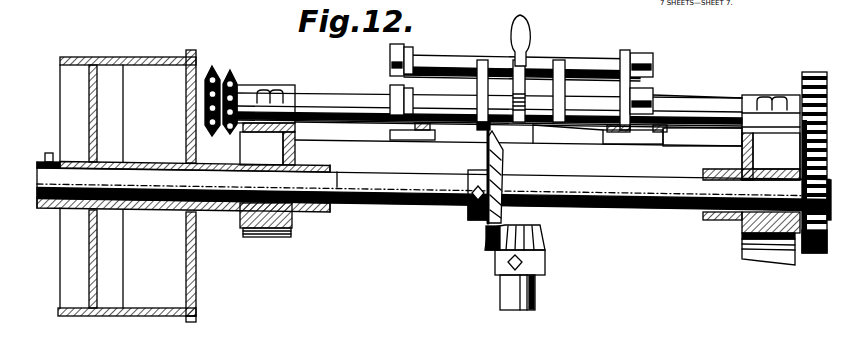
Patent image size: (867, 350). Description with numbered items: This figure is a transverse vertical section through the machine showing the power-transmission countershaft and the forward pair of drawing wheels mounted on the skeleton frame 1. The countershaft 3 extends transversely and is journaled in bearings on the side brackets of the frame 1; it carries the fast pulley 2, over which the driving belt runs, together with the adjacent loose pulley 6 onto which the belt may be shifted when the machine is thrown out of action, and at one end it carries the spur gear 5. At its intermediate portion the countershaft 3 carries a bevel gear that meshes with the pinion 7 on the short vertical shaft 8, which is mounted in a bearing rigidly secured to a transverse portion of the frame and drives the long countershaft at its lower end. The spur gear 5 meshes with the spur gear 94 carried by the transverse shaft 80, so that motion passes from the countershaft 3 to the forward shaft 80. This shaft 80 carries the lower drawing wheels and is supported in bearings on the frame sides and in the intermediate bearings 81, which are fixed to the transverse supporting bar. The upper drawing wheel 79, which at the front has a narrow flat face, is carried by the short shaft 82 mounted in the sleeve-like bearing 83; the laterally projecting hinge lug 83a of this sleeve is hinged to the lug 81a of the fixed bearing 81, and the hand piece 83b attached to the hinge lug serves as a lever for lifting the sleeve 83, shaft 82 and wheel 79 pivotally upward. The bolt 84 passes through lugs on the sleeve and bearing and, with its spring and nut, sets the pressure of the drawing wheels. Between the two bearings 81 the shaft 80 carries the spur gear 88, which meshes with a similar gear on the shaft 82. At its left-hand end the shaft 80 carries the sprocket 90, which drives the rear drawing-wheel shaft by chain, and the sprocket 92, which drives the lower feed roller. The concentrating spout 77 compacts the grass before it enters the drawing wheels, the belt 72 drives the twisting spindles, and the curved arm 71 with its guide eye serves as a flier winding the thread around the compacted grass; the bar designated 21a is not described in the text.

The skeleton frame 1 is at (285, 258).
The pulley 2 is at (165, 303).
The countershaft 3 is at (401, 204).
The spur gear 5 is at (810, 254).
The loose pulley 6 is at (88, 318).
The pinion 7 is at (546, 240).
The vertical shaft 8 is at (537, 295).
The bracket plate 21a is at (690, 141).
The curved arm 71 is at (390, 48).
The belt 72 is at (656, 94).
The concentrating spout 77 is at (388, 93).
The upper drawing wheel 79 is at (638, 47).
The transverse shaft 80 is at (712, 110).
The intermediate bearing 81 is at (587, 129).
The lug 81a is at (470, 60).
The short shaft 82 is at (657, 68).
The sleeve-like bearing 83 is at (573, 62).
The hinge lug 83a is at (527, 58).
The hand piece 83b is at (505, 52).
The bolt 84 is at (447, 124).
The spur gear 88 is at (525, 123).
The sprocket 90 is at (233, 73).
The sprocket 92 is at (213, 89).
The spur gear 94 is at (812, 72).